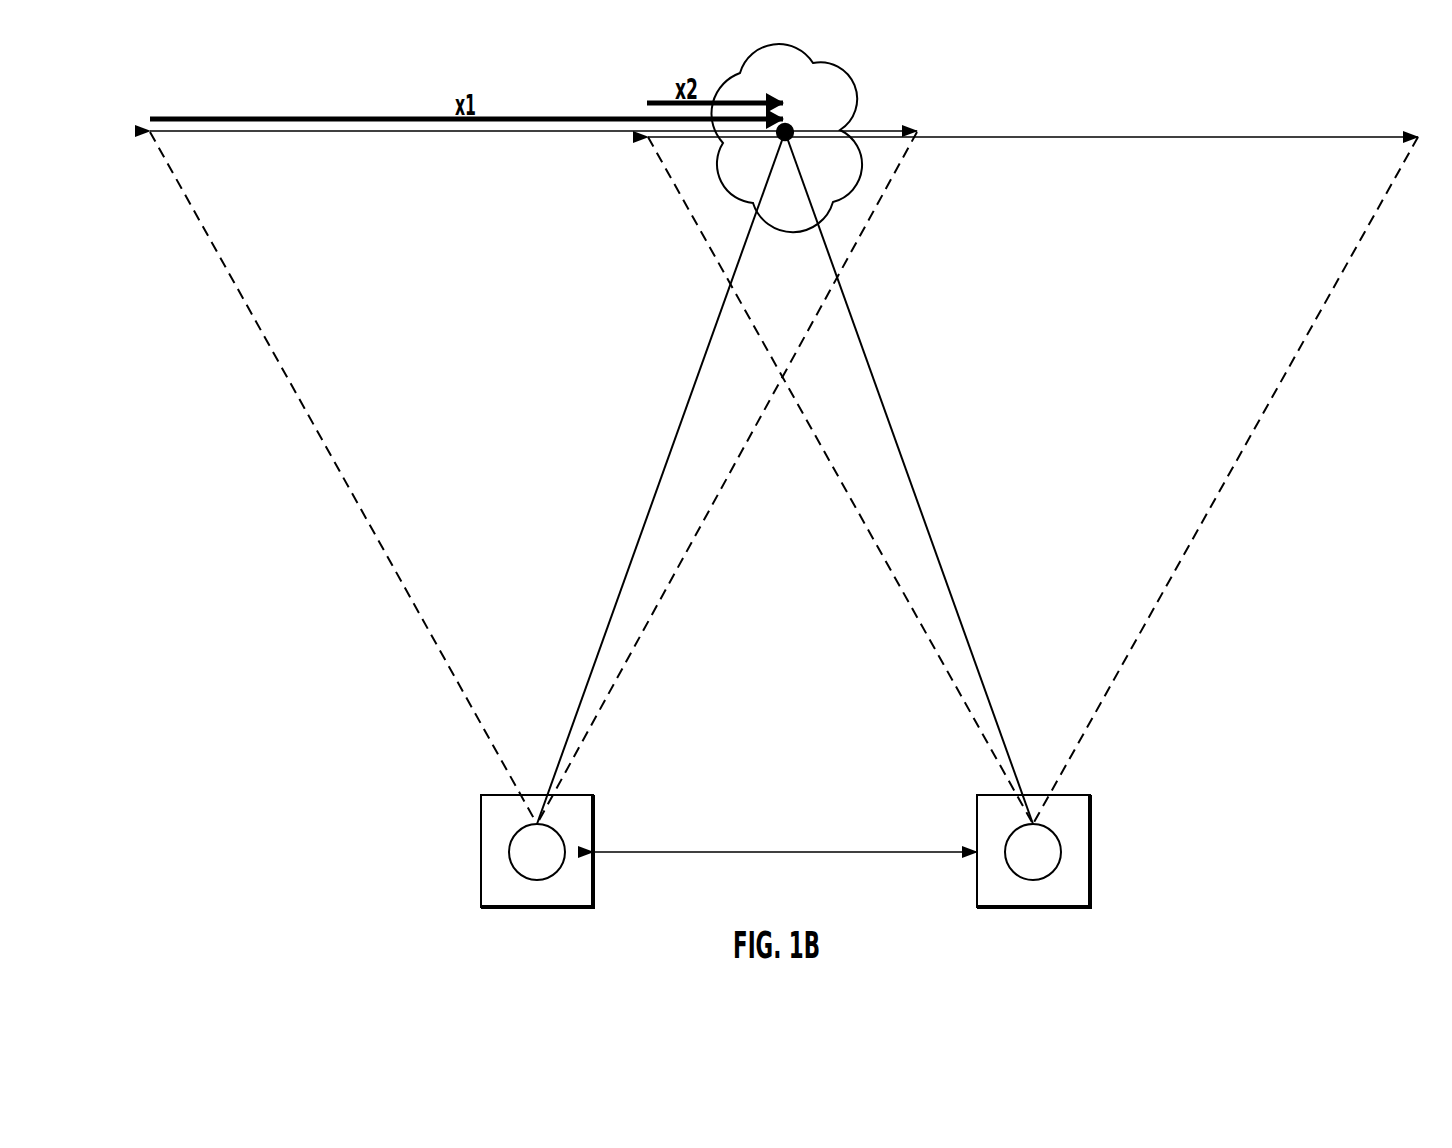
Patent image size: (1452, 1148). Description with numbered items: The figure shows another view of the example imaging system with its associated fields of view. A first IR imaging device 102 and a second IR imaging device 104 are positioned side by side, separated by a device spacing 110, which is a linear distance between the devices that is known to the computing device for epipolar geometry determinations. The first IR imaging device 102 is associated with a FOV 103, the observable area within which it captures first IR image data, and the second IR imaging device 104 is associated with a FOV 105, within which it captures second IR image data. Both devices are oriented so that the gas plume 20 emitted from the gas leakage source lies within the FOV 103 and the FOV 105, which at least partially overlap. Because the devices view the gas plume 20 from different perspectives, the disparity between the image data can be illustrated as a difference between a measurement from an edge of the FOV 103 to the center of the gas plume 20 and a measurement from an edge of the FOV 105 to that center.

The gas plume 20 is at (848, 76).
The first IR imaging device 102 is at (481, 843).
The second IR imaging device 104 is at (1090, 841).
The FOV 103 is at (437, 647).
The FOV 105 is at (954, 692).
The device spacing 110 is at (866, 852).